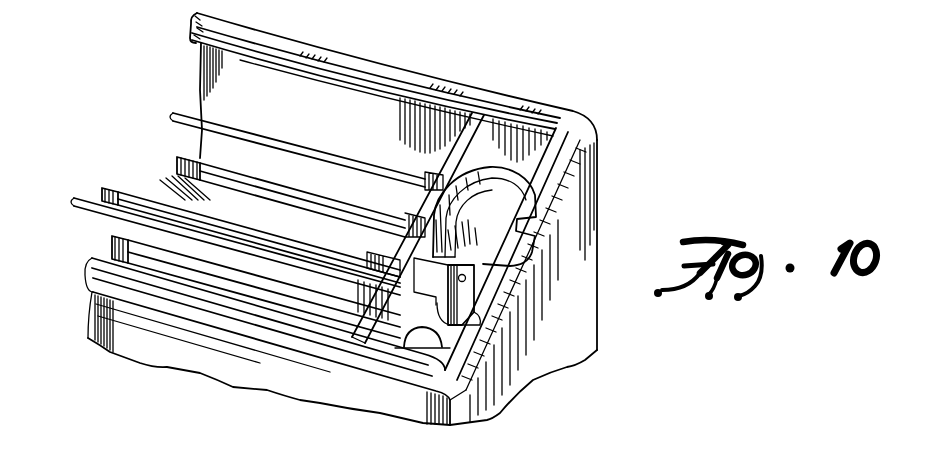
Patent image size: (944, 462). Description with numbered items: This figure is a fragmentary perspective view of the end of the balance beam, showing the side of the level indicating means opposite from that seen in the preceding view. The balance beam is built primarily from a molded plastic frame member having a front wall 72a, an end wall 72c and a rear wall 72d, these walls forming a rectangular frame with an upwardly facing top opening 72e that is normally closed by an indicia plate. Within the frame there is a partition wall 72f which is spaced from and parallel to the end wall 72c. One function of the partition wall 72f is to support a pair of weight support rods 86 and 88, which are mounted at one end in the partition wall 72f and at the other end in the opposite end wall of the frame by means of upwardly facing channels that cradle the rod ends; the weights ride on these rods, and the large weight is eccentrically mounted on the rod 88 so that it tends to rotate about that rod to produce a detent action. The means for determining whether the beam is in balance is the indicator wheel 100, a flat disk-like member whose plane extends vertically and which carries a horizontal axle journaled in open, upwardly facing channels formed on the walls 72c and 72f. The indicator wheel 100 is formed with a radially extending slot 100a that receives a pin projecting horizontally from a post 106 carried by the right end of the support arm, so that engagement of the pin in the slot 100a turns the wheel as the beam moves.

The front wall 72a is at (217, 357).
The end wall 72c is at (533, 360).
The rear wall 72d is at (300, 113).
The top opening 72e is at (335, 54).
The partition wall 72f is at (473, 153).
The weight support rod 86 is at (197, 115).
The weight support rod 88 is at (90, 200).
The indicator wheel 100 is at (487, 200).
The radially extending slot 100a is at (393, 330).
The post 106 is at (463, 290).